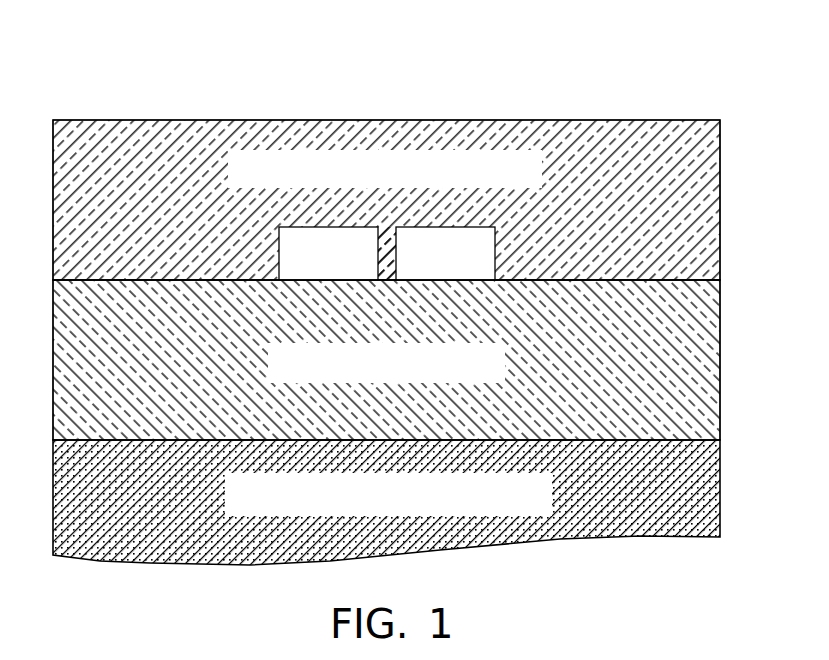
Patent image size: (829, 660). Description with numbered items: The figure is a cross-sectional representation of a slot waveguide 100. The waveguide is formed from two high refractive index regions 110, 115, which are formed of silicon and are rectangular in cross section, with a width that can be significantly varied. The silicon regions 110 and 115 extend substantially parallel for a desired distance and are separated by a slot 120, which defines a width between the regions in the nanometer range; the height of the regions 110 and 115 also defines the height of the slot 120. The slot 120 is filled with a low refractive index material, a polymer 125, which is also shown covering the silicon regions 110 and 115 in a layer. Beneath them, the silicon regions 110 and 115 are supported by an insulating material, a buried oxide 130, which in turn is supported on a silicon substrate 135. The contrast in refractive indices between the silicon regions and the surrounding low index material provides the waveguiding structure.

The slot waveguide 100 is at (410, 303).
The high refractive index region 110 is at (496, 252).
The high refractive index region 115 is at (278, 252).
The slot 120 is at (389, 229).
The polymer 125 is at (721, 212).
The buried oxide 130 is at (721, 360).
The silicon substrate 135 is at (721, 495).